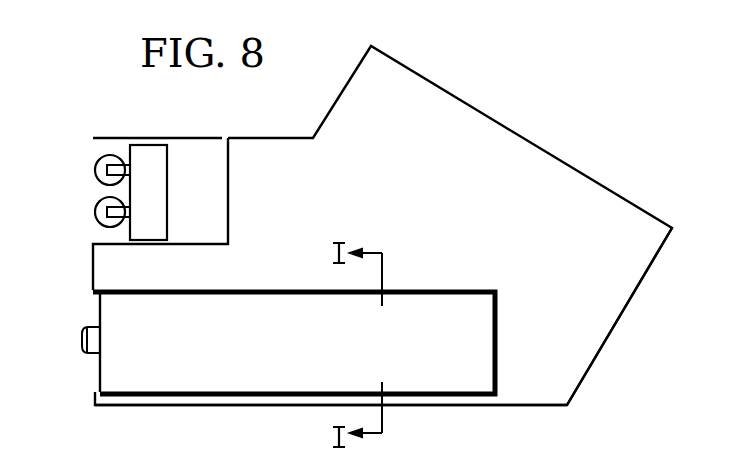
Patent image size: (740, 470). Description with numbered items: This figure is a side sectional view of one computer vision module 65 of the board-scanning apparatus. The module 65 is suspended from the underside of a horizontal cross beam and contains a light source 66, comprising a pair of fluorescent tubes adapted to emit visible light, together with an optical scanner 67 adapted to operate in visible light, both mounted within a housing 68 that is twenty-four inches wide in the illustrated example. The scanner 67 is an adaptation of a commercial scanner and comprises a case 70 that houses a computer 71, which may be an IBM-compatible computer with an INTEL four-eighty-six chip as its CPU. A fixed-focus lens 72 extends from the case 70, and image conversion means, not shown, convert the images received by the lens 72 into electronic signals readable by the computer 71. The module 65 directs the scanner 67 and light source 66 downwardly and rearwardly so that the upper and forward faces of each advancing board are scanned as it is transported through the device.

The computer vision module 65 is at (533, 123).
The light source 66 is at (97, 205).
The optical scanner 67 is at (118, 365).
The housing 68 is at (655, 215).
The case 70 is at (275, 397).
The computer 71 is at (294, 343).
The fixed-focus lens 72 is at (80, 342).